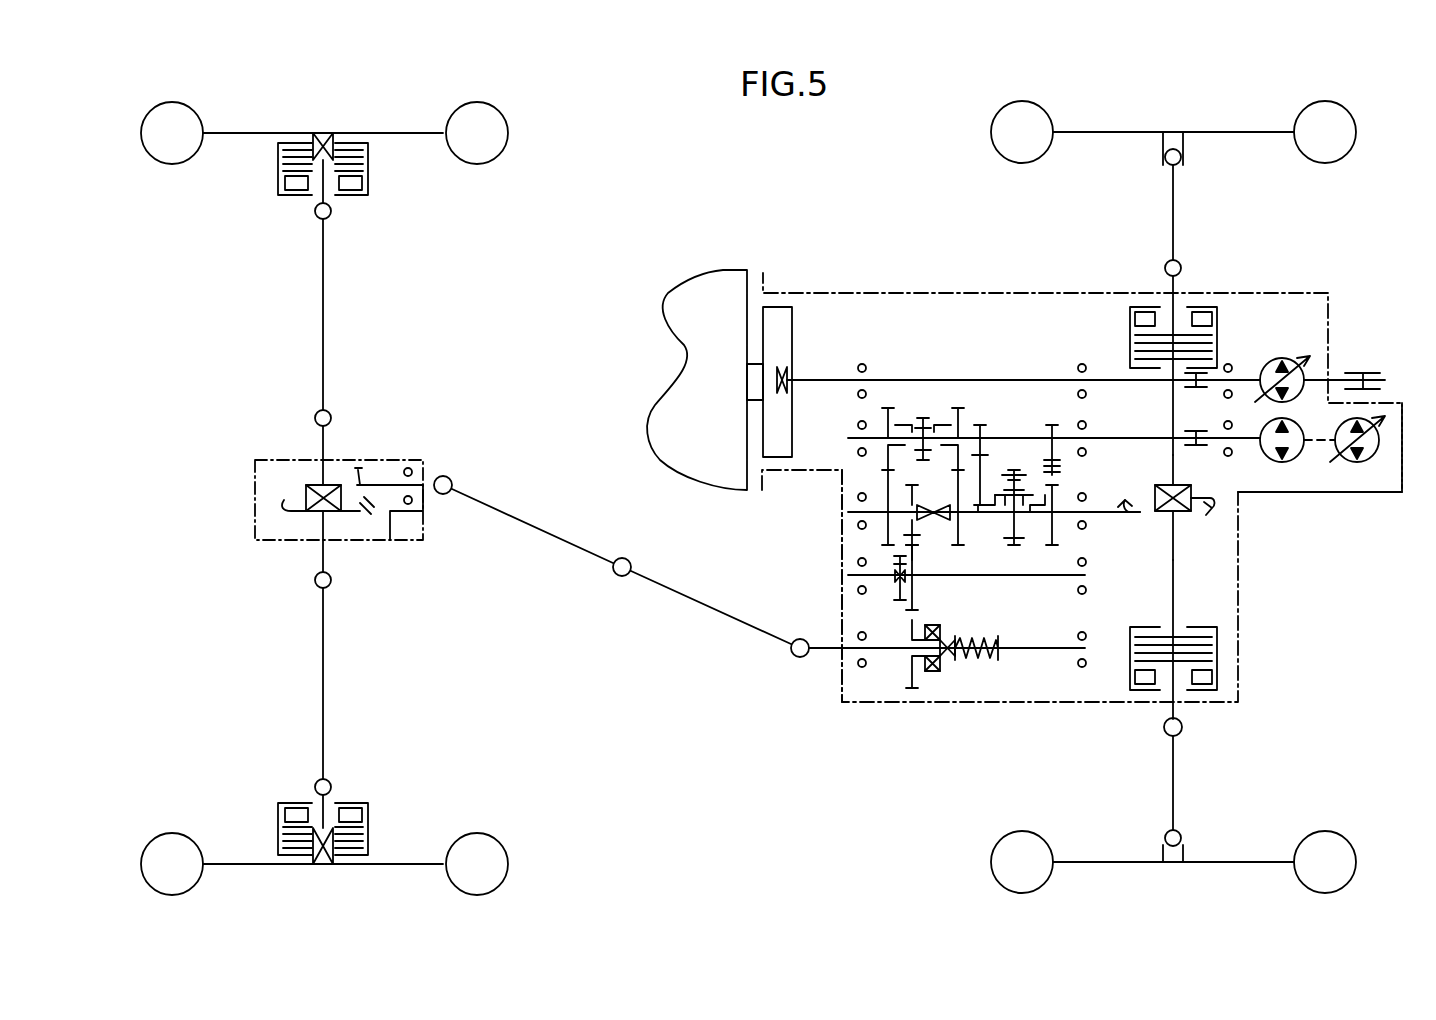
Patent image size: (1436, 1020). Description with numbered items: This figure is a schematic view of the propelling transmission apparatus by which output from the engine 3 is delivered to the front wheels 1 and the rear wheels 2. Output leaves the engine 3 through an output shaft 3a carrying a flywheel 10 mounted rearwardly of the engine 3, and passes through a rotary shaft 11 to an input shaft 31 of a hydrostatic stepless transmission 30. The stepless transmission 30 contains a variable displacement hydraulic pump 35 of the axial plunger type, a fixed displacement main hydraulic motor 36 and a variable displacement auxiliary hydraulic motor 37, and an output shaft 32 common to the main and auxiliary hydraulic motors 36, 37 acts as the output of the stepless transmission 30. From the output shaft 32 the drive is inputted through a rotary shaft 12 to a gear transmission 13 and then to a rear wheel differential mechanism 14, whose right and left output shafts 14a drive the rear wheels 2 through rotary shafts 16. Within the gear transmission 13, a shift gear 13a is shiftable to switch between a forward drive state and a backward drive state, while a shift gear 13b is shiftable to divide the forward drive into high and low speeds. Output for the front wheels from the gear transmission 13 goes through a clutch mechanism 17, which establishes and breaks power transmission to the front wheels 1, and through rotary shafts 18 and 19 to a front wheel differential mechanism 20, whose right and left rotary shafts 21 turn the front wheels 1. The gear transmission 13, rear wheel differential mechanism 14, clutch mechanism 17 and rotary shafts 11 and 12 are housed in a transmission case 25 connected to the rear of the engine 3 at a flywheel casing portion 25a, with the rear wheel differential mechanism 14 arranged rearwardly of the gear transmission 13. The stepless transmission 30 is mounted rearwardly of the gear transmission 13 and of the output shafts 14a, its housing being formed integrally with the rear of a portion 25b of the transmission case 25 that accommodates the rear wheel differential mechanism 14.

The front wheels 1 is at (500, 140).
The rear wheels 2 is at (990, 140).
The engine 3 is at (703, 290).
The output shaft 3a is at (752, 382).
The flywheel 10 is at (788, 349).
The rotary shaft 11 is at (975, 380).
The rotary shaft 12 is at (1100, 438).
The gear transmission 13 is at (952, 298).
The shift gear 13a is at (1018, 459).
The shift gear 13b is at (926, 407).
The rear wheel differential mechanism 14 is at (1208, 528).
The output shafts 14a is at (1173, 466).
The rotary shafts 16 is at (1178, 215).
The clutch mechanism 17 is at (876, 604).
The rotary shaft 18 is at (700, 605).
The rotary shaft 19 is at (523, 522).
The front wheel differential mechanism 20 is at (373, 526).
The rotary shafts 21 is at (330, 335).
The transmission case 25 is at (1046, 279).
The flywheel casing portion 25a is at (808, 470).
The portion of the transmission case 25b is at (1360, 500).
The hydrostatic stepless transmission 30 is at (1306, 320).
The input shaft 31 is at (1244, 378).
The output shaft 32 is at (1242, 448).
The variable displacement hydraulic pump 35 is at (1298, 360).
The main hydraulic motor 36 is at (1297, 461).
The auxiliary hydraulic motor 37 is at (1377, 461).